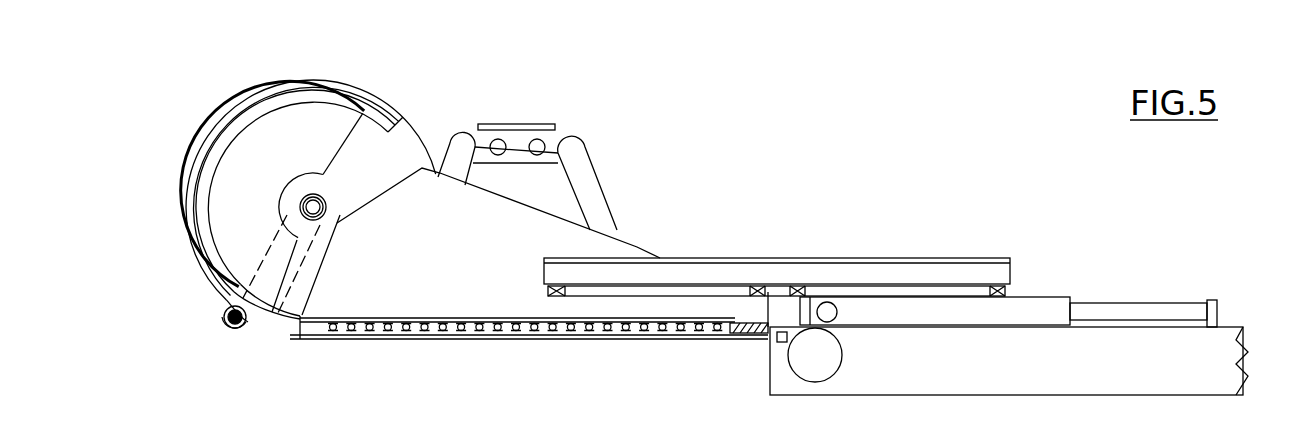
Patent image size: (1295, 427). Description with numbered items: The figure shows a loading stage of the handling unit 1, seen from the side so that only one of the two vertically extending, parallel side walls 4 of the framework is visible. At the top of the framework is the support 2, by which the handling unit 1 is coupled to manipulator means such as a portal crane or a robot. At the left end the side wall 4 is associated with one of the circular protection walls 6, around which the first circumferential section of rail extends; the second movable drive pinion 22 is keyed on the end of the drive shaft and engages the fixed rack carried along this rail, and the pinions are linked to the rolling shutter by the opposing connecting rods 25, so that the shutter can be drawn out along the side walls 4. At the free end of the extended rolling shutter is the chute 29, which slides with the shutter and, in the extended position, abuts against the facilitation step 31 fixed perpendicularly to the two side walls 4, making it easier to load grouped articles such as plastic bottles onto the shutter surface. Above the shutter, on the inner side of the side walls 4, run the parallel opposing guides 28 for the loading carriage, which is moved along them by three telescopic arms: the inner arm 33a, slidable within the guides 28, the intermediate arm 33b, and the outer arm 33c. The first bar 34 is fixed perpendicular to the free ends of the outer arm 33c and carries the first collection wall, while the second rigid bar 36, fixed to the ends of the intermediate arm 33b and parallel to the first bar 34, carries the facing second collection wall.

The handling unit 1 is at (524, 110).
The support 2 is at (594, 197).
The side walls 4 is at (637, 247).
The circular protection walls 6 is at (248, 162).
The second movable drive pinion 22 is at (220, 322).
The connecting rods 25 is at (263, 317).
The guides 28 is at (750, 300).
The chute 29 is at (712, 332).
The facilitation step 31 is at (737, 335).
The inner arm 33a is at (808, 272).
The intermediate arm 33b is at (1008, 310).
The outer arm 33c is at (1115, 310).
The first bar 34 is at (1212, 313).
The second rigid bar 36 is at (837, 310).